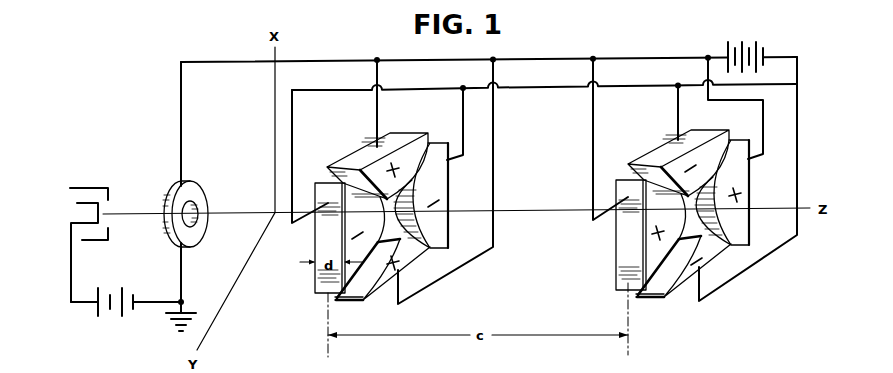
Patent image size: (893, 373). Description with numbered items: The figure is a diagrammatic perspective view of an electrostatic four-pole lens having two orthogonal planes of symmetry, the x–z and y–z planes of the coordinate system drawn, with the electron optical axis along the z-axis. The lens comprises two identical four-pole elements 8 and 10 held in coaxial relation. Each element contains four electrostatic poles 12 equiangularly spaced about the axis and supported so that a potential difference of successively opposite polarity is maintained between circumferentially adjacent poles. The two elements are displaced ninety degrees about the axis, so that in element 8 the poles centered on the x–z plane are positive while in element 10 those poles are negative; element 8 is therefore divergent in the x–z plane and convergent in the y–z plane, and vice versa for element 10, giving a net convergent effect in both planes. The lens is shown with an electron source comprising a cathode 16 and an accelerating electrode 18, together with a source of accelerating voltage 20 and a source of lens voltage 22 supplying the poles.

The four-pole element 8 is at (345, 149).
The four-pole element 10 is at (645, 147).
The electrostatic pole 12 is at (450, 201).
The cathode 16 is at (85, 200).
The accelerating electrode 18 is at (196, 192).
The source of accelerating voltage 20 is at (123, 313).
The source of lens voltage 22 is at (748, 44).